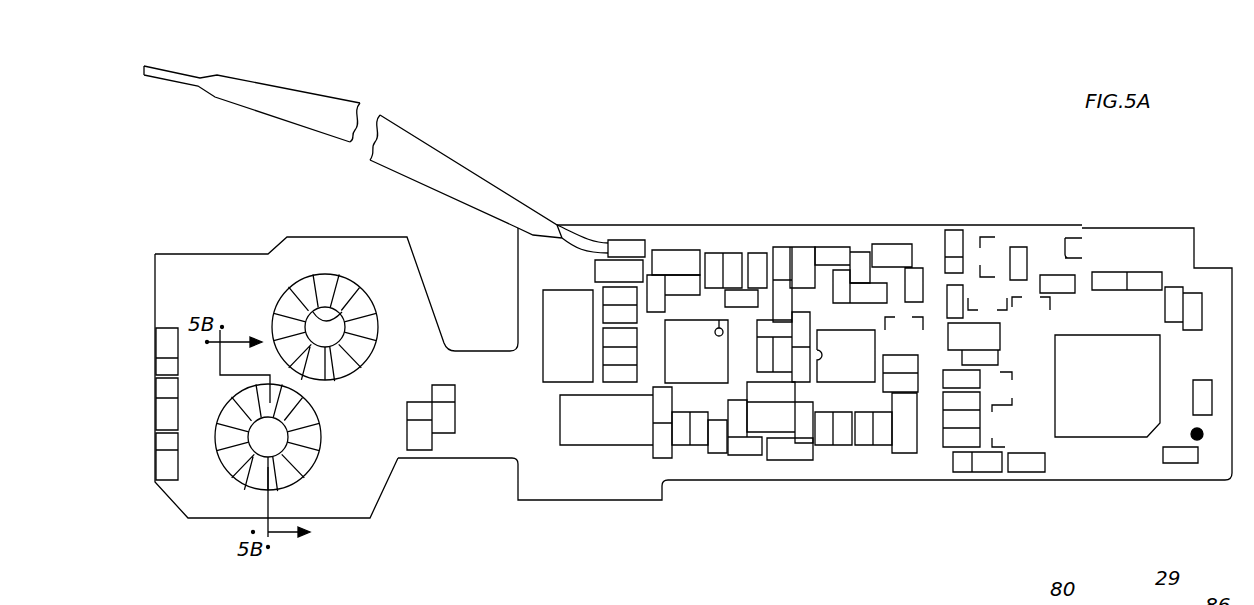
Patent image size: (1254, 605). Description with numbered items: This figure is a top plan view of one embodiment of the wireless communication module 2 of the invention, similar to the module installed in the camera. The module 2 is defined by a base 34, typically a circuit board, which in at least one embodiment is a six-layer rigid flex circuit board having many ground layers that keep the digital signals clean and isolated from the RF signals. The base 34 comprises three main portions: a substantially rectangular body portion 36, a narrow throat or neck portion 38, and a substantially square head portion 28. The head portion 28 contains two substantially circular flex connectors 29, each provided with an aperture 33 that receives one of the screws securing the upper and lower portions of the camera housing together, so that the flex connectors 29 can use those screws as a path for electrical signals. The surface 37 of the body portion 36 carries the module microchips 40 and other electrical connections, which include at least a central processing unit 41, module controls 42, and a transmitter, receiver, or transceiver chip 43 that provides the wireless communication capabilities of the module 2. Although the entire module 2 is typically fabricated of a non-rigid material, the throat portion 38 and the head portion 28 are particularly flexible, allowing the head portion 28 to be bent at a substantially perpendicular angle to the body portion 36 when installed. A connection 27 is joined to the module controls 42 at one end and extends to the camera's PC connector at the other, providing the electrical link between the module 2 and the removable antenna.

The wireless communication module 2 is at (597, 500).
The connection 27 is at (412, 133).
The head portion 28 is at (212, 520).
The flex connectors 29 is at (297, 463).
The apertures 33 is at (345, 312).
The base 34 is at (702, 238).
The body portion 36 is at (923, 480).
The surface 37 is at (927, 238).
The throat or neck portion 38 is at (443, 458).
The module microchips 40 is at (882, 248).
The central processing unit 41 is at (1095, 415).
The module controls 42 is at (620, 250).
The transceiver chip 43 is at (678, 362).